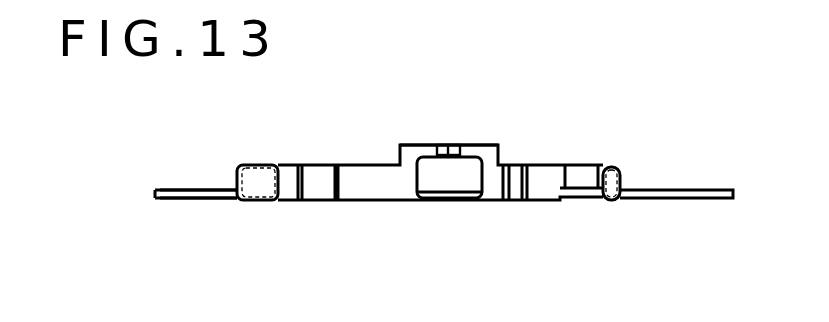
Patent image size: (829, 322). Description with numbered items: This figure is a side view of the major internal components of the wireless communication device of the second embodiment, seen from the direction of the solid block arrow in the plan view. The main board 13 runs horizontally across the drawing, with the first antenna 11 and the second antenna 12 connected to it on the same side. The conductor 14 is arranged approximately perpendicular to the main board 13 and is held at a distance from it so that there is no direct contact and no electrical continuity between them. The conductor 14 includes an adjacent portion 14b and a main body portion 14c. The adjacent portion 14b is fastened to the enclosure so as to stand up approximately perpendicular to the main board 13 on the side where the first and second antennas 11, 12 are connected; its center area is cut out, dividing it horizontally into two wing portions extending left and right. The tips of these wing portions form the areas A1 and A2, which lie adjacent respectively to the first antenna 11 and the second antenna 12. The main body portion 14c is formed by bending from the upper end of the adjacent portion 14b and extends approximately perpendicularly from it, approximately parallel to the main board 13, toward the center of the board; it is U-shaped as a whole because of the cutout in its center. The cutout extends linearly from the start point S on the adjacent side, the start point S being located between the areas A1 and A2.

The first antenna 11 is at (695, 200).
The second antenna 12 is at (205, 198).
The main board 13 is at (187, 190).
The conductor 14 is at (493, 207).
The adjacent portion 14b is at (382, 200).
The main body portion 14c is at (487, 145).
The start point S is at (450, 147).
The area A1 is at (612, 167).
The area A2 is at (250, 166).